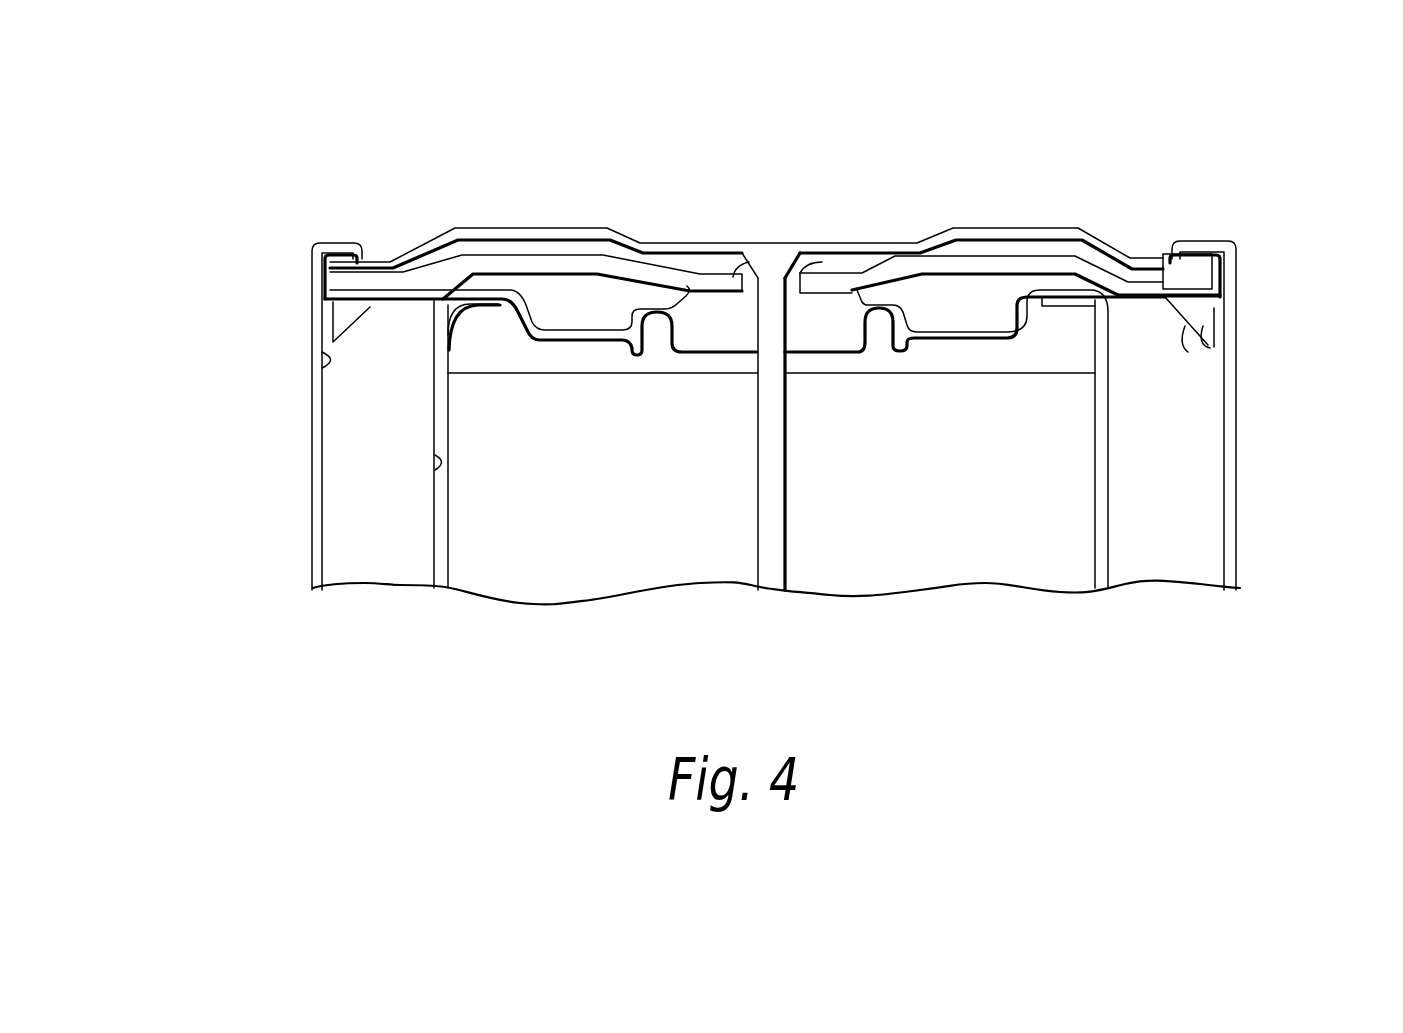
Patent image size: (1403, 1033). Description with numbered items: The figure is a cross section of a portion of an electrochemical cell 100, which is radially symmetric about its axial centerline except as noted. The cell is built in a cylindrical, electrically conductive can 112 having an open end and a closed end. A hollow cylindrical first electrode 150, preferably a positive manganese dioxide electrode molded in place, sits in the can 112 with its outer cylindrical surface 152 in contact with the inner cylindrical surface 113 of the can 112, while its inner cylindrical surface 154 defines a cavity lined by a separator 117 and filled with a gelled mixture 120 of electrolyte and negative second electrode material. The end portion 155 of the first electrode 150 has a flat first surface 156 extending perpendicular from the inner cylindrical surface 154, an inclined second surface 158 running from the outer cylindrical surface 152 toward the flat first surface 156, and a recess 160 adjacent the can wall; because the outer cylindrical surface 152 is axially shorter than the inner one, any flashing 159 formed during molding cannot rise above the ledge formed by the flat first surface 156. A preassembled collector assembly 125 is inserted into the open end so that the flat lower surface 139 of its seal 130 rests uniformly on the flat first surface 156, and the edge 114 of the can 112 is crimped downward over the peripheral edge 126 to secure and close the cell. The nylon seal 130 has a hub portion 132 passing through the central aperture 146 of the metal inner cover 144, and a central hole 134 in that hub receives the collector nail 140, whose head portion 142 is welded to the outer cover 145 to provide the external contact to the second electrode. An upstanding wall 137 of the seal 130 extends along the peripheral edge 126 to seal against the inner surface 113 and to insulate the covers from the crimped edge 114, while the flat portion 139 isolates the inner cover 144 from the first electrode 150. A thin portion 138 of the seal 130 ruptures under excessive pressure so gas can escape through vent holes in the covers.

The electrochemical cell 100 is at (858, 104).
The can 112 is at (318, 315).
The inner cylindrical surface of can 113 is at (327, 364).
The edge of can 114 is at (340, 257).
The separator 117 is at (1105, 497).
The mixture of electrolyte and second electrode material 120 is at (975, 500).
The collector assembly 125 is at (461, 205).
The peripheral edge 126 is at (326, 262).
The seal 130 is at (598, 338).
The hub portion 132 is at (720, 322).
The central hole 134 is at (773, 263).
The upstanding wall 137 is at (383, 262).
The thin portion 138 is at (808, 275).
The flat lower surface 139 is at (1108, 310).
The collector nail 140 is at (772, 513).
The head portion 142 is at (785, 276).
The inner cover 144 is at (590, 262).
The outer cover 145 is at (498, 236).
The central aperture 146 is at (883, 305).
The first electrode 150 is at (362, 415).
The outer cylindrical surface 152 is at (322, 383).
The inner cylindrical surface 154 is at (440, 462).
The end portion 155 is at (303, 331).
The flat first surface 156 is at (1167, 293).
The second surface 158 is at (1184, 352).
The flashing 159 is at (1215, 314).
The recess 160 is at (1197, 337).